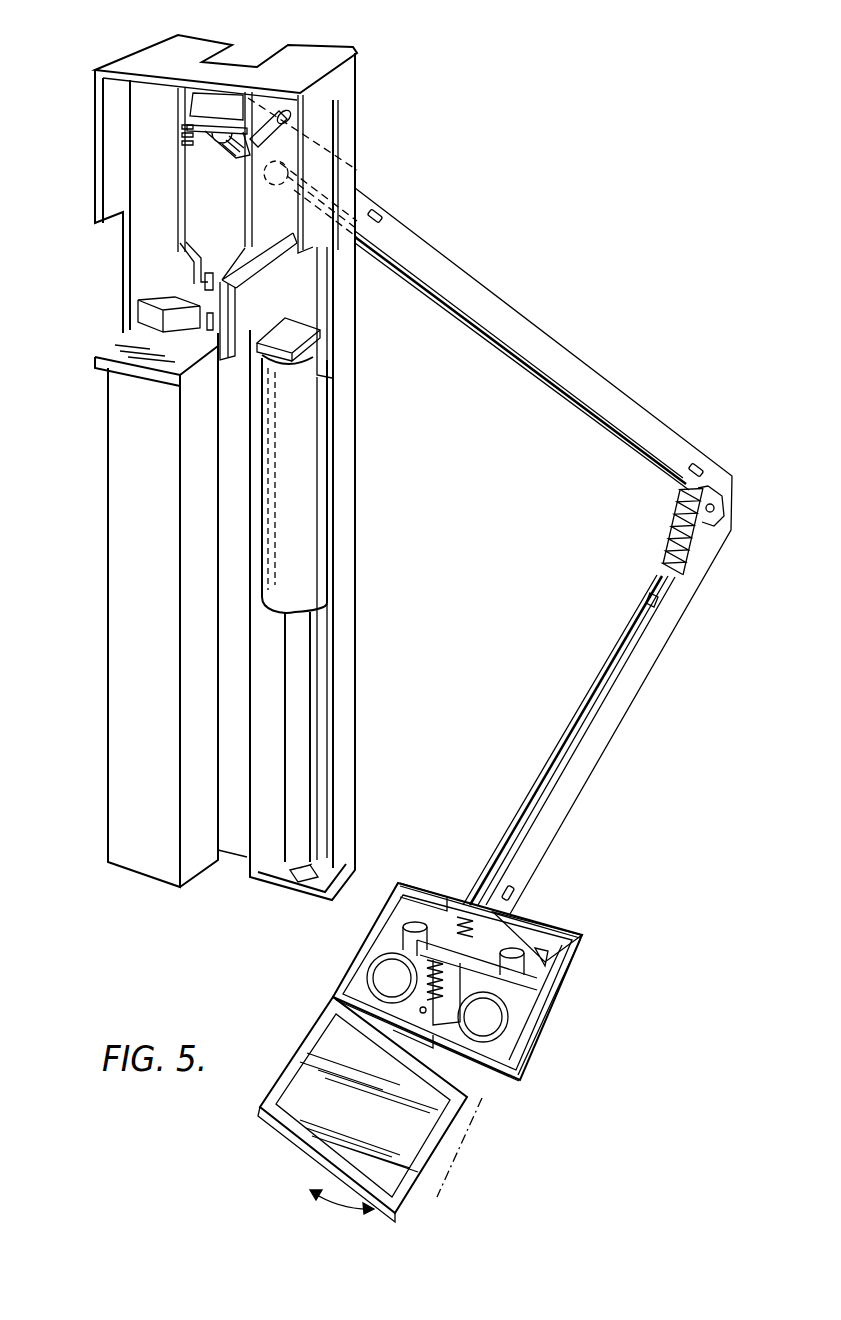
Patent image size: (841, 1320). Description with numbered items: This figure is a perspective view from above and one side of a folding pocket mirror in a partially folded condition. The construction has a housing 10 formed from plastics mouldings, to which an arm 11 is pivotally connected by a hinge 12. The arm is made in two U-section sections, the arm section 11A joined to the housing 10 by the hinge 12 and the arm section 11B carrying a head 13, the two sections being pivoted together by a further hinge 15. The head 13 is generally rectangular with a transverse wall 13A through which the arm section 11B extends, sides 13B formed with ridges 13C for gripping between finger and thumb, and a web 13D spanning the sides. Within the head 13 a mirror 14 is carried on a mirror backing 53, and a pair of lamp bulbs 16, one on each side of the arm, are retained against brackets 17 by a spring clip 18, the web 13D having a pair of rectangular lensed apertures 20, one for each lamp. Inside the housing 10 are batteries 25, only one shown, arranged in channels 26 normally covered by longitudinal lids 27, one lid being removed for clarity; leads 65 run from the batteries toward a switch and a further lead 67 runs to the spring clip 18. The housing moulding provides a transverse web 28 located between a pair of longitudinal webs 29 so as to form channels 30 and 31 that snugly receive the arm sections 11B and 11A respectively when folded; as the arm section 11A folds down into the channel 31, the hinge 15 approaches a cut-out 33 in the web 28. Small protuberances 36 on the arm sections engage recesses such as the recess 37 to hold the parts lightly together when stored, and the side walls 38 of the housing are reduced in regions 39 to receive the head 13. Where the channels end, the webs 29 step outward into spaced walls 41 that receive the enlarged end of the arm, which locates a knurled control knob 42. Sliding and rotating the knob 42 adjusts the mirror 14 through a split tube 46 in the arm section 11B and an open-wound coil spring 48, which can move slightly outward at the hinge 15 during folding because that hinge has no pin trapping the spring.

The housing 10 is at (341, 479).
The arm 11 is at (566, 340).
The arm section 11A is at (623, 397).
The arm section 11B is at (647, 648).
The hinge 12 is at (283, 114).
The head 13 is at (460, 900).
The transverse wall 13A is at (537, 922).
The sides 13B is at (553, 1007).
The ridges 13C is at (577, 965).
The web 13D is at (485, 1052).
The mirror 14 is at (475, 1098).
The hinge 15 is at (697, 508).
The lamp bulbs 16 is at (378, 962).
The brackets 17 is at (420, 900).
The spring clip 18 is at (437, 947).
The lensed apertures 20 is at (367, 988).
The batteries 25 is at (314, 432).
The channels 26 is at (320, 692).
The longitudinal lids 27 is at (118, 488).
The transverse web 28 is at (183, 250).
The longitudinal webs 29 is at (205, 307).
The channel 30 is at (205, 280).
The channel 31 is at (237, 262).
The cut-out 33 is at (247, 857).
The protuberances 36 is at (379, 212).
The recess 37 is at (205, 333).
The side walls 38 is at (117, 147).
The regions 39 is at (325, 320).
The walls 41 is at (289, 154).
The control knob 42 is at (237, 153).
The split tube 46 is at (607, 687).
The coil spring 48 is at (682, 550).
The mirror backing 53 is at (422, 1197).
The leads 65 is at (313, 757).
The lead 67 is at (310, 337).